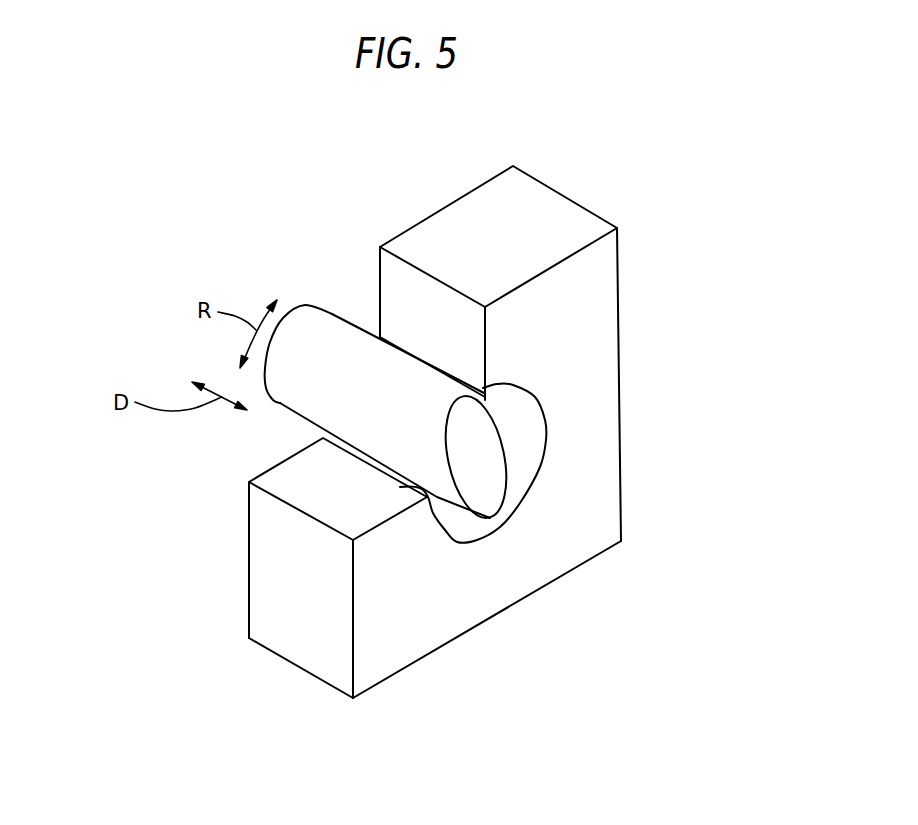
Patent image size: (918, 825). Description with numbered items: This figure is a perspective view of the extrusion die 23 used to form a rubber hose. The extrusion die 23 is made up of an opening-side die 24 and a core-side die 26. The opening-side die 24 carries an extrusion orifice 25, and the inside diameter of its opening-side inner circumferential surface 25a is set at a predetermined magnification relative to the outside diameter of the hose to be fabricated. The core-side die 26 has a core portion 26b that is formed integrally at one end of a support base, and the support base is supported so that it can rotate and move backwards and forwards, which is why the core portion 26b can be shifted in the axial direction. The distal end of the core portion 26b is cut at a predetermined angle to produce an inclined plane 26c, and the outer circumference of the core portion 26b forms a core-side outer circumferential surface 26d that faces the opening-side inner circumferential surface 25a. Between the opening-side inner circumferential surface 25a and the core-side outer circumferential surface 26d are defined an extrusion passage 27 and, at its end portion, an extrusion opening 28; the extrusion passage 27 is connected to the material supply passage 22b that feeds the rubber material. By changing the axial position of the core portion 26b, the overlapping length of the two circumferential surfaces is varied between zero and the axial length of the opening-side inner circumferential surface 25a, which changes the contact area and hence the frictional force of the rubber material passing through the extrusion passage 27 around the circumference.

The material supply passage 22b is at (376, 342).
The extrusion die 23 is at (637, 233).
The opening-side die 24 is at (253, 572).
The extrusion orifice 25 is at (510, 505).
The opening-side inner circumferential surface 25a is at (452, 517).
The core-side die 26 is at (280, 402).
The core portion 26b is at (402, 425).
The inclined plane 26c is at (485, 470).
The core-side outer circumferential surface 26d is at (400, 487).
The extrusion passage 27 is at (483, 527).
The extrusion opening 28 is at (447, 540).